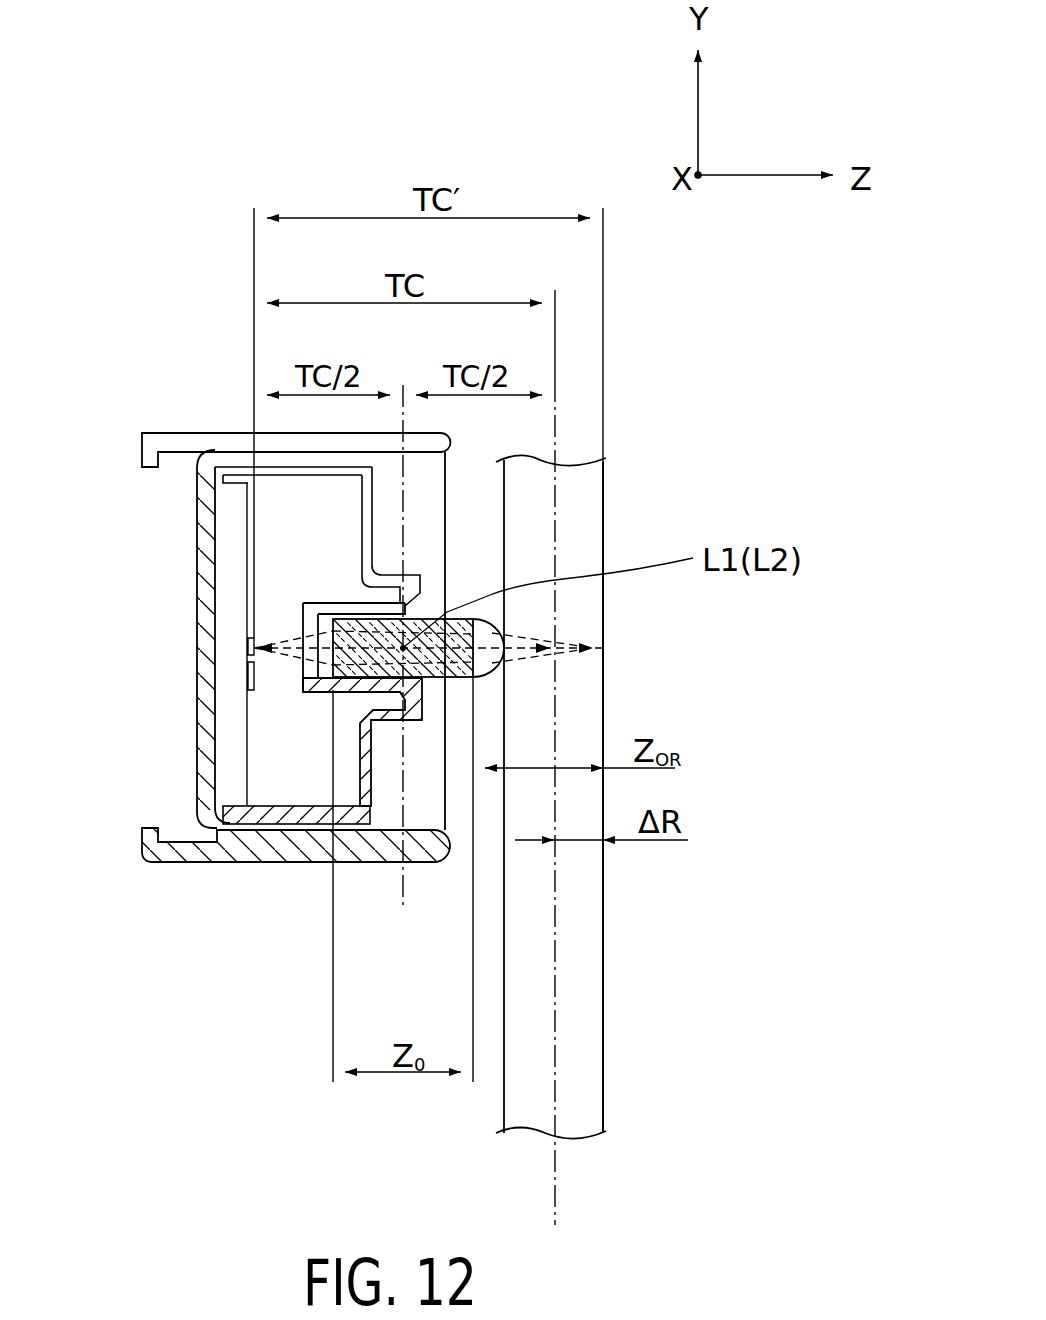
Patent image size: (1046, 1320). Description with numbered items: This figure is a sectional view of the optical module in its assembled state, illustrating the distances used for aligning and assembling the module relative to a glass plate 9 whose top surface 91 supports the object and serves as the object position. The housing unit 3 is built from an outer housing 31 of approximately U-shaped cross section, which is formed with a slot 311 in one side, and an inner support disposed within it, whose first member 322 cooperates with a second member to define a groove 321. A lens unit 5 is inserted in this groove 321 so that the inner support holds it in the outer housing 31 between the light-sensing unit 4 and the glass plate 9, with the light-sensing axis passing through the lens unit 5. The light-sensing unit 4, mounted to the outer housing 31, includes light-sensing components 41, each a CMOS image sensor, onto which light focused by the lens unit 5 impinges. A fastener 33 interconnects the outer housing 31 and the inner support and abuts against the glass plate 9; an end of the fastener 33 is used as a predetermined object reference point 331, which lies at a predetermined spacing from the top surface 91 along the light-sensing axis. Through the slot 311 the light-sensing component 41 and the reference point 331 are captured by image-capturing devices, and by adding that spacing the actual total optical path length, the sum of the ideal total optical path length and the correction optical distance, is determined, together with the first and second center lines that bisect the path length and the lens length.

The housing unit 3 is at (296, 725).
The outer housing 31 is at (184, 862).
The slot 311 is at (298, 462).
The groove 321 is at (302, 657).
The first member 322 is at (287, 828).
The fastener 33 is at (528, 653).
The predetermined object reference point 331 is at (497, 658).
The light-sensing unit 4 is at (211, 590).
The light-sensing component 41 is at (248, 643).
The lens unit 5 is at (428, 617).
The glass plate 9 is at (628, 796).
The top surface 91 is at (603, 983).